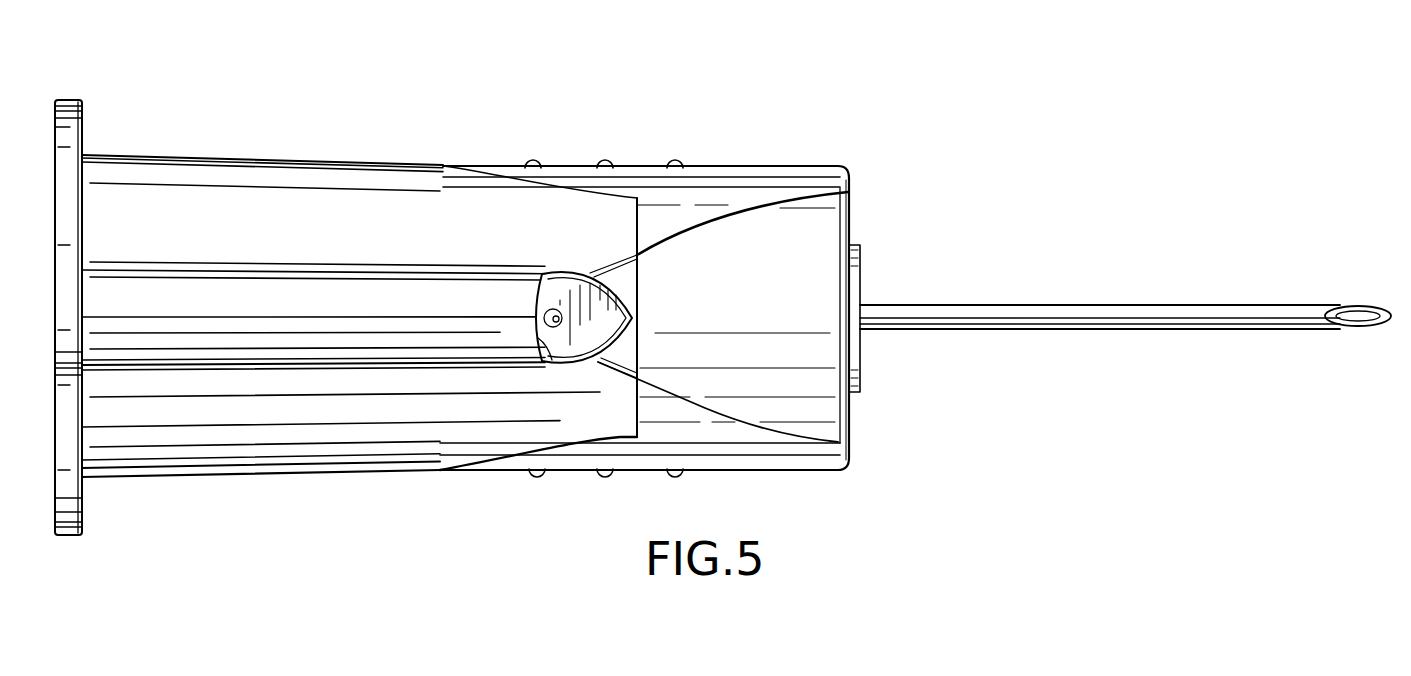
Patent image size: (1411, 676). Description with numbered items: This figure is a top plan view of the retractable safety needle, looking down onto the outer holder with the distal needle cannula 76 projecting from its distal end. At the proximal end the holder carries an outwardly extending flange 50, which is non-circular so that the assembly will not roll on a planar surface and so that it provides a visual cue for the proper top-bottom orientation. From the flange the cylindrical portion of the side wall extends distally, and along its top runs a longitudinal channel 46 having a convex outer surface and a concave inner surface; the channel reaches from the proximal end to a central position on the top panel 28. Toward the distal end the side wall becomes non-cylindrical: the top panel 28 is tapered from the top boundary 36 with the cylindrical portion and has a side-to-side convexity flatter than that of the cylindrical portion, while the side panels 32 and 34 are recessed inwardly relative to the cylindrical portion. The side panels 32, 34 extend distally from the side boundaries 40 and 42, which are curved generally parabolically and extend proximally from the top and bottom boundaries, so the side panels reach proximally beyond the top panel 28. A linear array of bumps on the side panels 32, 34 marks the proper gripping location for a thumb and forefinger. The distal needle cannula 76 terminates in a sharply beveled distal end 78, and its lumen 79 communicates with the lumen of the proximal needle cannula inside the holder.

The top panel 28 is at (791, 303).
The side panel 32 is at (712, 450).
The side panel 34 is at (775, 183).
The top boundary 36 is at (652, 210).
The side boundary 40 is at (455, 474).
The side boundary 42 is at (447, 168).
The channel 46 is at (288, 290).
The flange 50 is at (70, 97).
The distal needle cannula 76 is at (1034, 307).
The sharply beveled distal end 78 is at (1373, 306).
The lumen 79 is at (1352, 318).